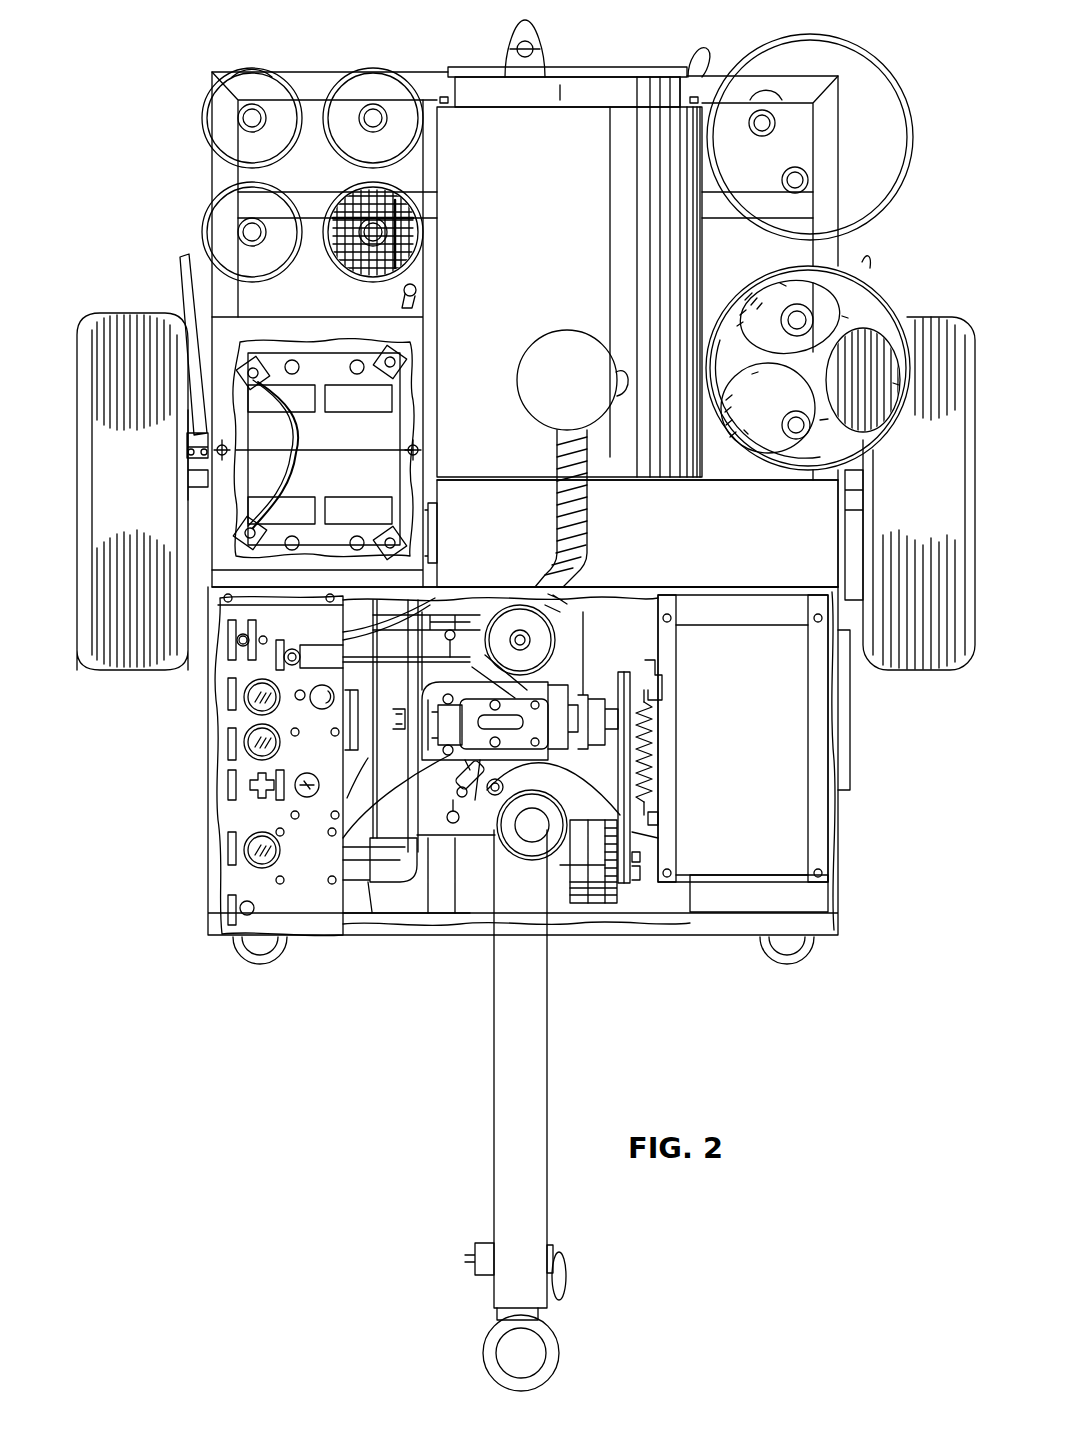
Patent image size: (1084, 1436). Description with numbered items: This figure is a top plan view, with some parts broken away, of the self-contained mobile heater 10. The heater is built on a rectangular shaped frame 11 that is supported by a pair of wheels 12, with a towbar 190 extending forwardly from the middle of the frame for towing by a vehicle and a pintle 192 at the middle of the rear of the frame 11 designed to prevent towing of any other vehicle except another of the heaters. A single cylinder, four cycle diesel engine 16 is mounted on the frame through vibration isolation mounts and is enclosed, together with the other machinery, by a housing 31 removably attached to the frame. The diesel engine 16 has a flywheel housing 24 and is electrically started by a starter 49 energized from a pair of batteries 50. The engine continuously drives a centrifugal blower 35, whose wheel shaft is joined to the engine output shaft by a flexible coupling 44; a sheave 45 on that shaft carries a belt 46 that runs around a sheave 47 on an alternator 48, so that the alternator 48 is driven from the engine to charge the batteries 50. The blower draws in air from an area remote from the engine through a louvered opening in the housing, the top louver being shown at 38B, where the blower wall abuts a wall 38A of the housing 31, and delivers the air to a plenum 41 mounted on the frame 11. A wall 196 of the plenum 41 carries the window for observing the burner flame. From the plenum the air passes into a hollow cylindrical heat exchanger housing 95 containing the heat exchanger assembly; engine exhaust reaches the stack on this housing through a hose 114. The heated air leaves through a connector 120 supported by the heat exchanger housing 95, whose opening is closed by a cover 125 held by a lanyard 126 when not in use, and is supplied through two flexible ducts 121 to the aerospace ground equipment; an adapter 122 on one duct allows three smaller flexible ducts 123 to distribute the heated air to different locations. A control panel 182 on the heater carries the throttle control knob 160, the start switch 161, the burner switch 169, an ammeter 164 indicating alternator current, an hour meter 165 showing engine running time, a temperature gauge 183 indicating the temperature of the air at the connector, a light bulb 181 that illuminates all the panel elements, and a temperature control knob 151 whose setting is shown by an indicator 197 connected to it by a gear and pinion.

The mobile heater 10 is at (212, 947).
The frame 11 is at (845, 258).
The wheels 12 is at (120, 312).
The diesel engine 16 is at (555, 682).
The flywheel housing 24 is at (343, 835).
The housing 31 is at (755, 585).
The centrifugal blower 35 is at (800, 880).
The wall of housing 38A is at (842, 838).
The top louver 38B is at (850, 770).
The plenum 41 is at (736, 553).
The flexible coupling 44 is at (595, 695).
The sheave 45 is at (655, 678).
The belt 46 is at (648, 822).
The sheave 47 is at (634, 882).
The alternator 48 is at (593, 910).
The starter 49 is at (372, 913).
The batteries 50 is at (390, 423).
The heat exchanger housing 95 is at (708, 263).
The hose 114 is at (587, 542).
The connector 120 is at (583, 90).
The flexible ducts 121 is at (908, 172).
The adapter 122 is at (893, 303).
The flexible ducts 123 is at (372, 68).
The cover 125 is at (632, 77).
The lanyard 126 is at (706, 60).
The temperature control knob 151 is at (245, 787).
The throttle control knob 160 is at (296, 657).
The start switch 161 is at (240, 642).
The ammeter 164 is at (245, 755).
The hour meter 165 is at (255, 862).
The burner switch 169 is at (265, 645).
The light bulb 181 is at (328, 709).
The control panel 182 is at (218, 846).
The temperature gauge 183 is at (245, 709).
The towbar 190 is at (492, 1208).
The pintle 192 is at (512, 68).
The wall of plenum 196 is at (437, 577).
The indicator 197 is at (295, 797).